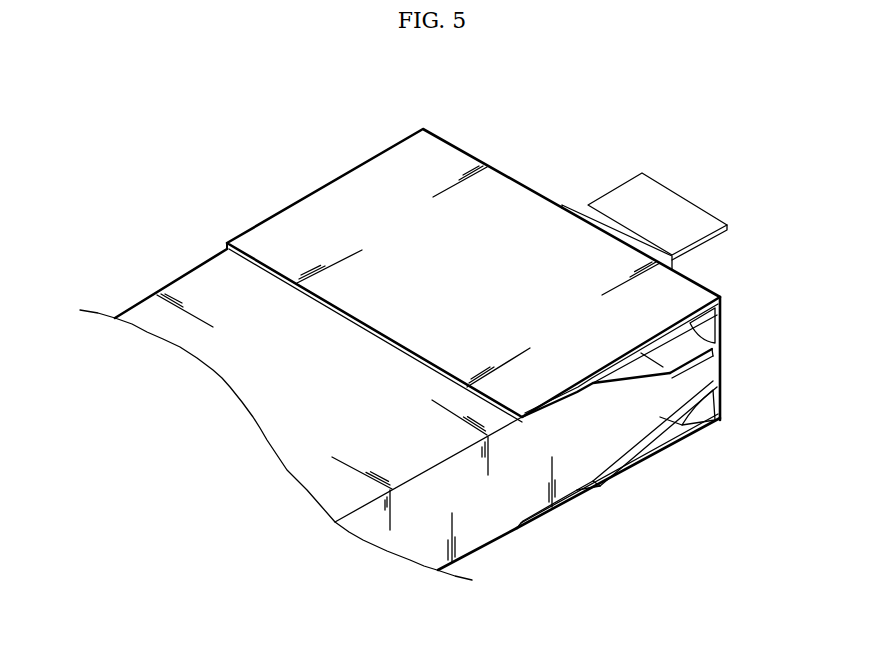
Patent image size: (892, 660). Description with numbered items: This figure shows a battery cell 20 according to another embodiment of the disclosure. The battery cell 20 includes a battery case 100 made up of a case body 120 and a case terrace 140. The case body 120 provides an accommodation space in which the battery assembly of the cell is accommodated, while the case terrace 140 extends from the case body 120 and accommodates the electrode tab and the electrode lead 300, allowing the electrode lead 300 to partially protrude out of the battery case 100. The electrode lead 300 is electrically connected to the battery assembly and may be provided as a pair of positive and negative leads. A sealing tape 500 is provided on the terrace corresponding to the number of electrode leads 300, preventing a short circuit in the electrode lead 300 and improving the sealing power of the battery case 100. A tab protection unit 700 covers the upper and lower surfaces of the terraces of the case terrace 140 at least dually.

The battery cell 20 is at (431, 351).
The battery case 100 is at (400, 440).
The case body 120 is at (475, 531).
The case terrace 140 is at (652, 362).
The electrode lead 300 is at (648, 192).
The sealing tape 500 is at (572, 206).
The tab protection unit 700 is at (473, 265).